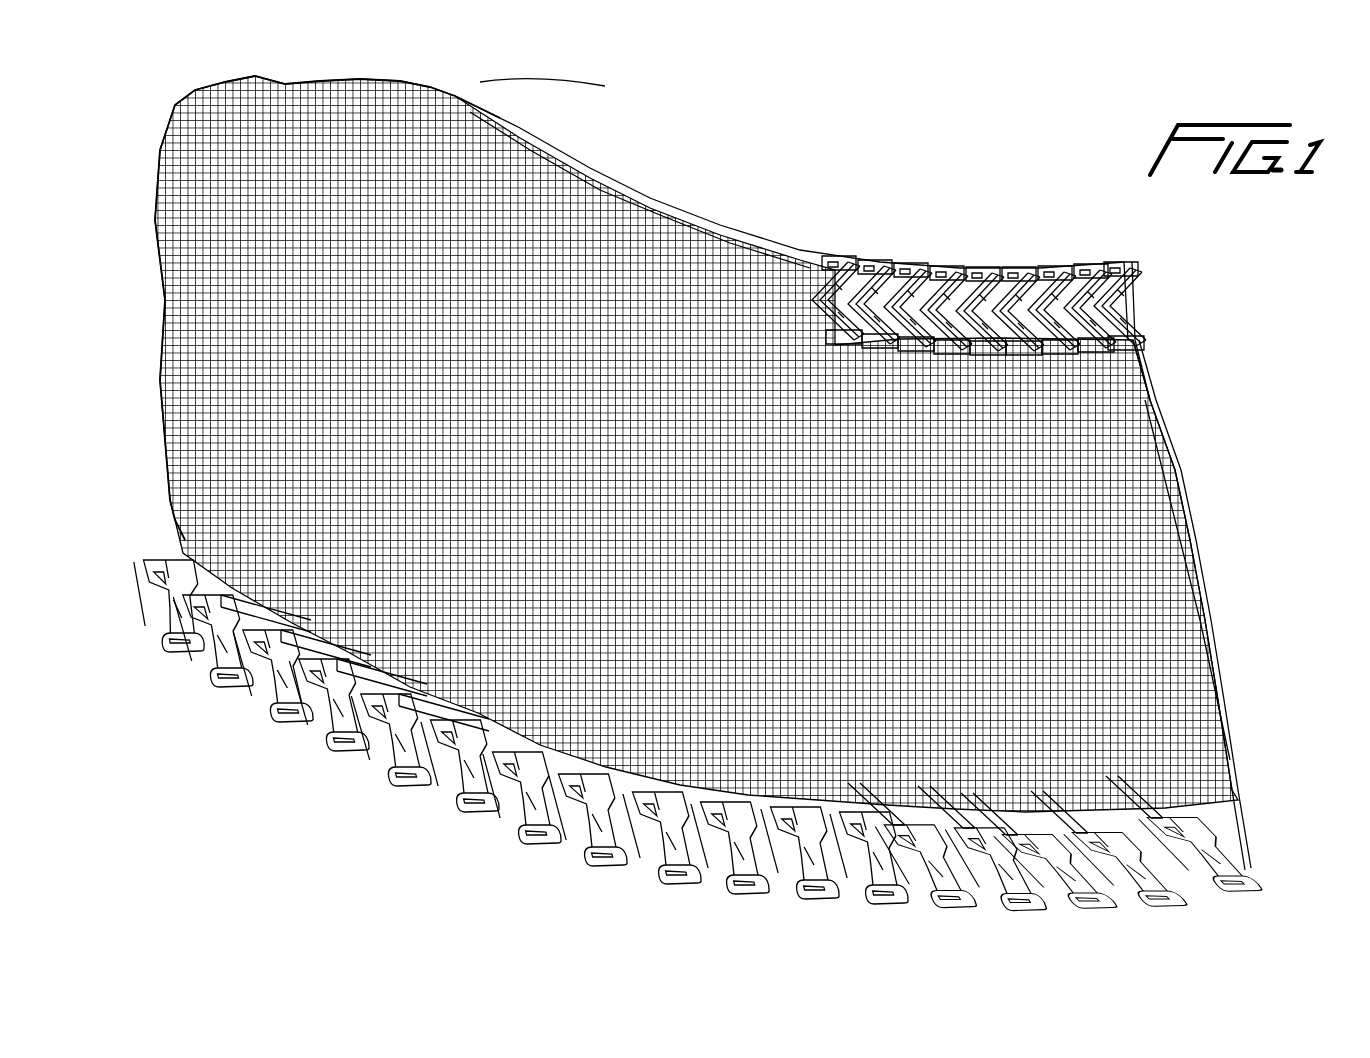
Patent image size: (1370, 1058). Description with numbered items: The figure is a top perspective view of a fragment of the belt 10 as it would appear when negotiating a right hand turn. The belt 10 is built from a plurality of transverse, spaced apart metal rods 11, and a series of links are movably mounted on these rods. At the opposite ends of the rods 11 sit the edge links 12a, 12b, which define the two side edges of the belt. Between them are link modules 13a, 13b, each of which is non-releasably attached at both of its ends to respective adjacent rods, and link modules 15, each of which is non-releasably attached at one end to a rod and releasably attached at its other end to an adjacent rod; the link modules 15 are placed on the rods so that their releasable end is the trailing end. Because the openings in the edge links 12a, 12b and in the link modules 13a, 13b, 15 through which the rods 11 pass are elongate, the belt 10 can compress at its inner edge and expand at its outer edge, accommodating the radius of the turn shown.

The belt 10 is at (420, 870).
The transverse metal rods 11 is at (330, 713).
The edge link 12a is at (720, 877).
The edge link 12b is at (833, 257).
The link module 13a is at (1212, 661).
The link module 13b is at (1150, 390).
The link module 15 is at (1185, 545).